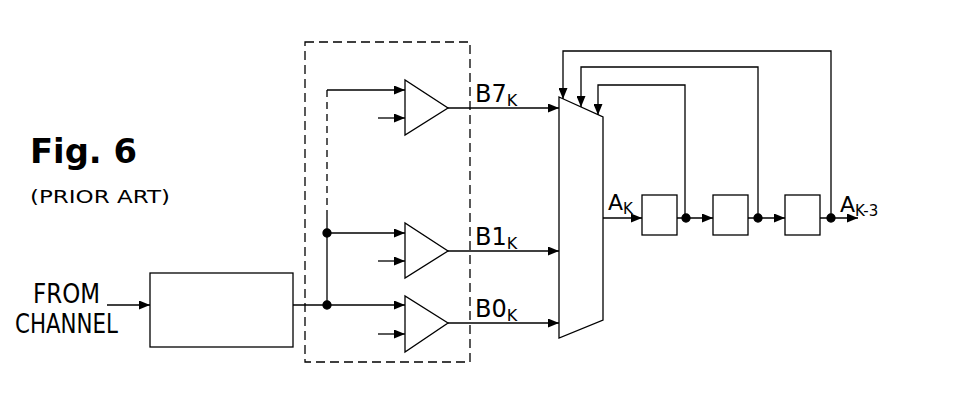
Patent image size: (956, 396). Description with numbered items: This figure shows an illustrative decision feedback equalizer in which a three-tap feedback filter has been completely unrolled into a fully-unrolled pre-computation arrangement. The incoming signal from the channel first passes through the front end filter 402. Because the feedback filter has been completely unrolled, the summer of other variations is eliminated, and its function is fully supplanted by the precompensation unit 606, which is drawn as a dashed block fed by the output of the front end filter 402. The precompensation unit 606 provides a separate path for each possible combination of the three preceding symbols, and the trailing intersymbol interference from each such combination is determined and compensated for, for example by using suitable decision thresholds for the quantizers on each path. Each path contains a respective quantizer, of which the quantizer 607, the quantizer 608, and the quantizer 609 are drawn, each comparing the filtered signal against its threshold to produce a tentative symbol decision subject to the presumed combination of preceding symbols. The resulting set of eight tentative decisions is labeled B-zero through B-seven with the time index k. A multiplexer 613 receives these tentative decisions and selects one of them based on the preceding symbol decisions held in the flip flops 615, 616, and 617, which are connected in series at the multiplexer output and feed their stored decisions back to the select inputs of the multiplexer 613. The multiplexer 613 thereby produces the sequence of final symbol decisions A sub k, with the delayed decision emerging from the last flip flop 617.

The front end filter 402 is at (215, 347).
The precompensation unit 606 is at (378, 40).
The quantizer 607 is at (440, 295).
The quantizer 608 is at (440, 223).
The quantizer 609 is at (423, 92).
The multiplexer 613 is at (605, 123).
The flip flop 615 is at (652, 235).
The flip flop 616 is at (723, 235).
The flip flop 617 is at (795, 235).